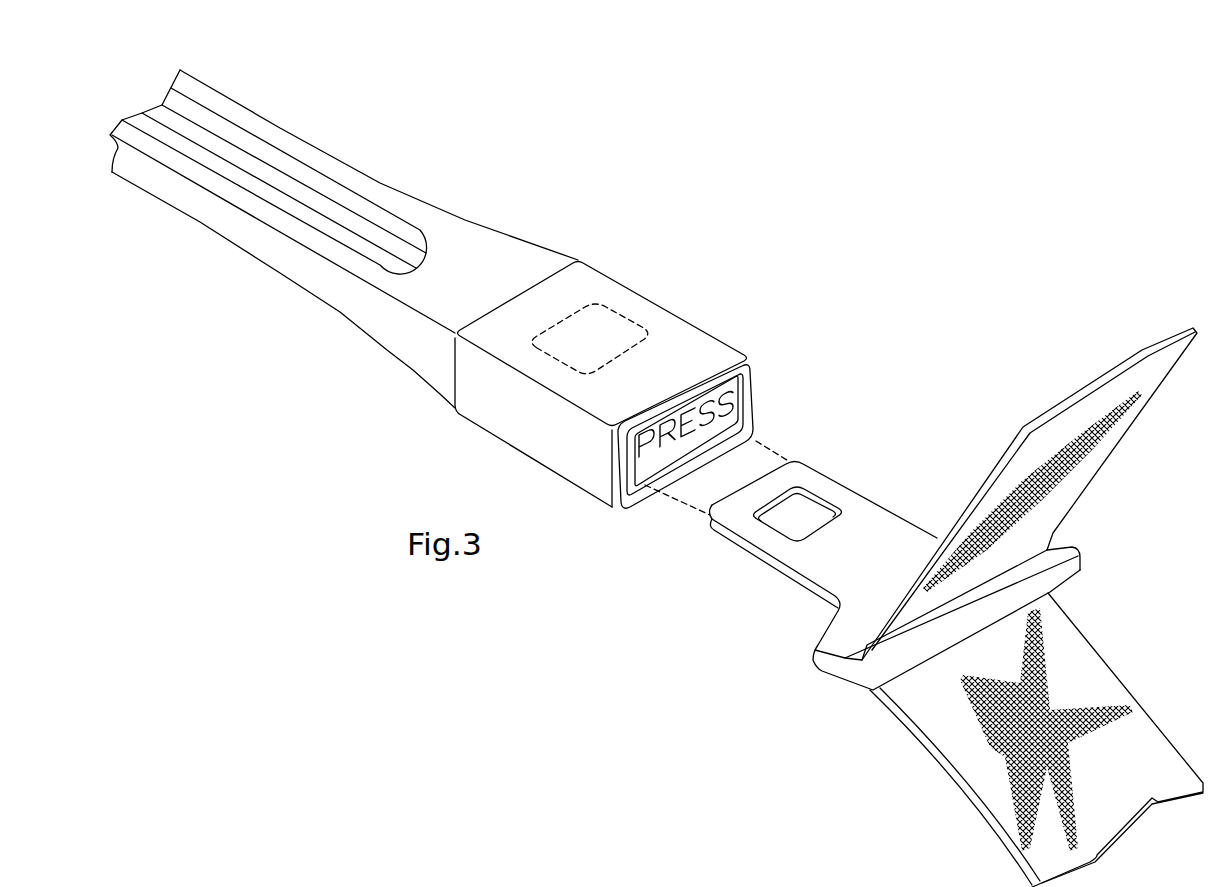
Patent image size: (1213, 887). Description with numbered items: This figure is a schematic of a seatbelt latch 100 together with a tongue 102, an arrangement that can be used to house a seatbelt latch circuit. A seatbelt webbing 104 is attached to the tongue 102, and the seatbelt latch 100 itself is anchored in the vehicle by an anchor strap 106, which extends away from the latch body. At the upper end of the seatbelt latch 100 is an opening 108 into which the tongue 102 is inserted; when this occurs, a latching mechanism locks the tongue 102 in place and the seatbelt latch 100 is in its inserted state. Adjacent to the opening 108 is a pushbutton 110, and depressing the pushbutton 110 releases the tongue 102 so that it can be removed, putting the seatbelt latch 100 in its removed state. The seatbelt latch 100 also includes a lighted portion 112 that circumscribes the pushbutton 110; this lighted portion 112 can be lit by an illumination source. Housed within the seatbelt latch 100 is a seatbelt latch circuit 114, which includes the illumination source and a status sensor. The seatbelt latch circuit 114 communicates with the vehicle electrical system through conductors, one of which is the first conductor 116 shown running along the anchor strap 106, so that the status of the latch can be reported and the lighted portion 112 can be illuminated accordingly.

The seatbelt latch 100 is at (676, 307).
The tongue 102 is at (850, 490).
The seatbelt webbing 104 is at (1078, 628).
The anchor strap 106 is at (465, 218).
The opening 108 is at (641, 485).
The pushbutton 110 is at (740, 397).
The lighted portion 112 is at (749, 350).
The seatbelt latch circuit 114 is at (223, 162).
The first conductor 116 is at (262, 157).